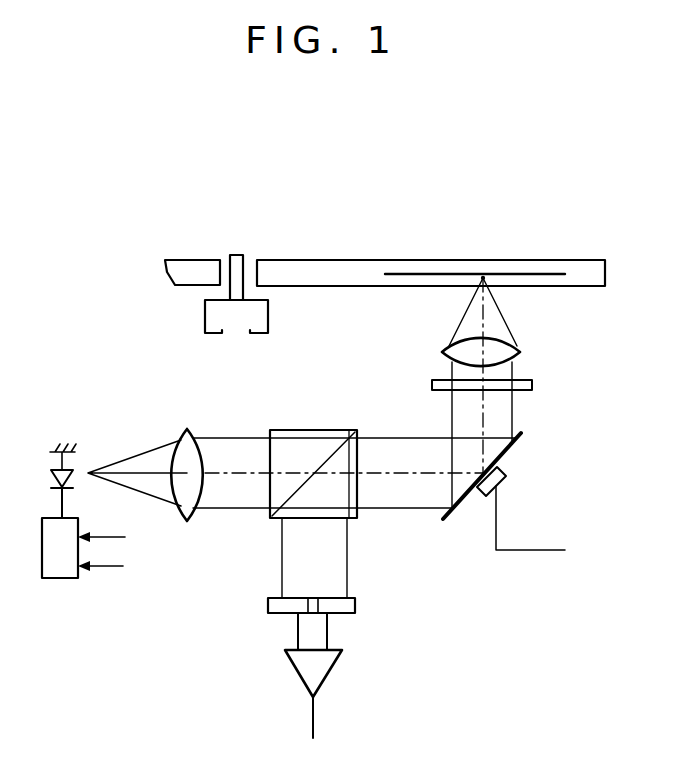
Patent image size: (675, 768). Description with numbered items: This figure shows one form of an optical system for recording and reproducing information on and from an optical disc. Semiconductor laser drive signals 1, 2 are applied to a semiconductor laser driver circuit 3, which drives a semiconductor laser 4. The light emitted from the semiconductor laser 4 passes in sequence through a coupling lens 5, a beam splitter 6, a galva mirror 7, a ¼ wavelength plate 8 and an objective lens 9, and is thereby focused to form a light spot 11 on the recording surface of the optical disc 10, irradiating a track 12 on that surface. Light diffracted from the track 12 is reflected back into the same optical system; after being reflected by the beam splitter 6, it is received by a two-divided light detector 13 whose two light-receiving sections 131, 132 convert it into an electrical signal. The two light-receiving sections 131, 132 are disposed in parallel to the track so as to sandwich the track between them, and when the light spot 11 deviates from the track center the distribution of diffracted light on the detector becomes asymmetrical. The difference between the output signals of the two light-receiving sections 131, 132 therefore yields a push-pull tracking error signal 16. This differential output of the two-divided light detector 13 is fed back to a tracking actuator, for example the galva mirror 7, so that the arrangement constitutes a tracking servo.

The semiconductor laser drive signal 1 is at (113, 537).
The semiconductor laser drive signal 2 is at (112, 568).
The semiconductor laser driver circuit 3 is at (75, 578).
The semiconductor laser 4 is at (51, 479).
The coupling lens 5 is at (188, 432).
The beam splitter 6 is at (310, 430).
The galva mirror 7 is at (515, 441).
The ¼ wavelength plate 8 is at (532, 386).
The objective lens 9 is at (521, 351).
The optical disc 10 is at (605, 278).
The light spot 11 is at (483, 278).
The track 12 is at (405, 272).
The two-divided light detector 13 is at (355, 600).
The light-receiving section 131 is at (268, 606).
The light-receiving section 132 is at (355, 613).
The push-pull tracking error signal 16 is at (313, 722).